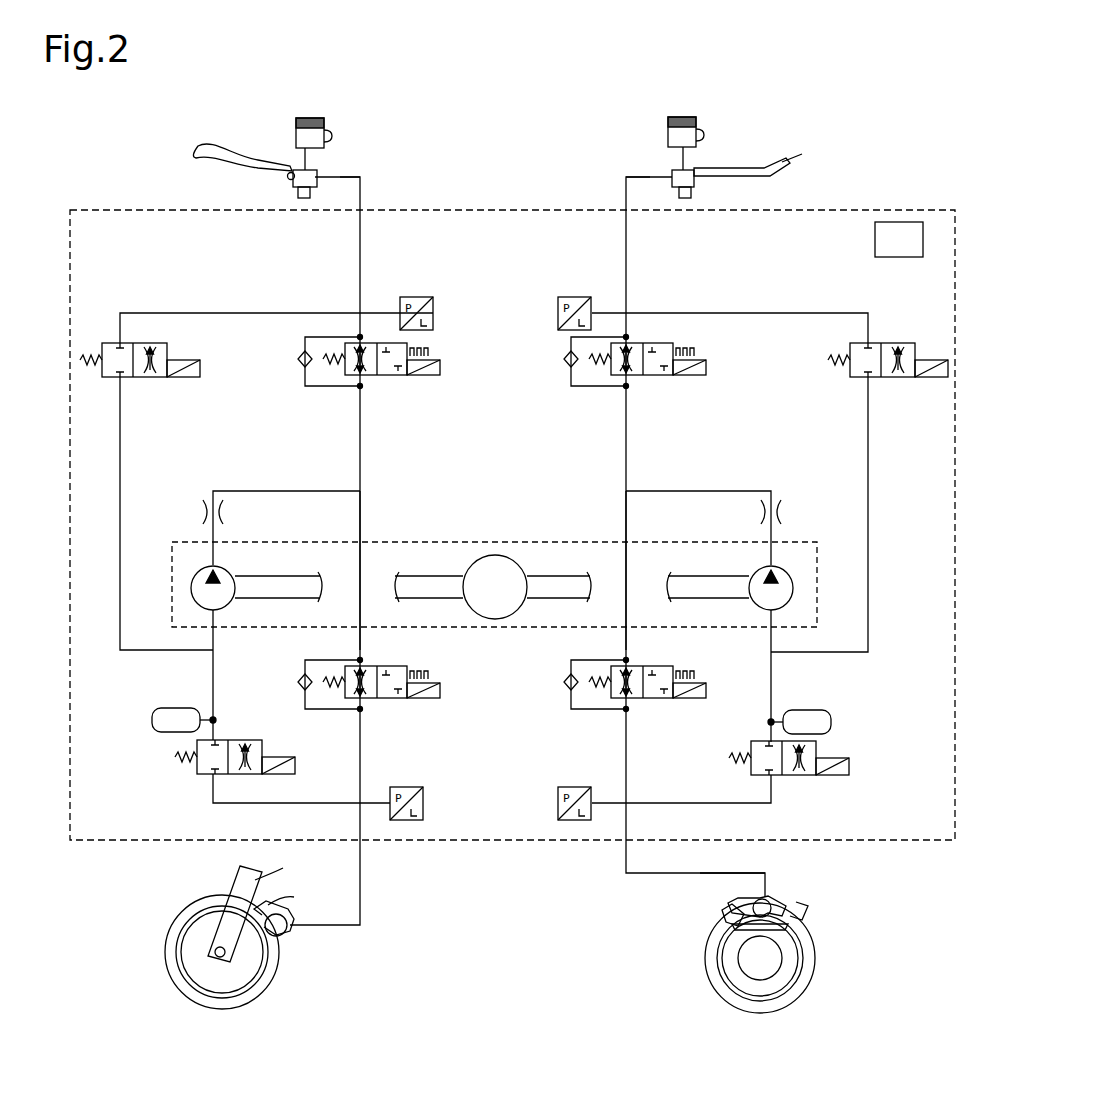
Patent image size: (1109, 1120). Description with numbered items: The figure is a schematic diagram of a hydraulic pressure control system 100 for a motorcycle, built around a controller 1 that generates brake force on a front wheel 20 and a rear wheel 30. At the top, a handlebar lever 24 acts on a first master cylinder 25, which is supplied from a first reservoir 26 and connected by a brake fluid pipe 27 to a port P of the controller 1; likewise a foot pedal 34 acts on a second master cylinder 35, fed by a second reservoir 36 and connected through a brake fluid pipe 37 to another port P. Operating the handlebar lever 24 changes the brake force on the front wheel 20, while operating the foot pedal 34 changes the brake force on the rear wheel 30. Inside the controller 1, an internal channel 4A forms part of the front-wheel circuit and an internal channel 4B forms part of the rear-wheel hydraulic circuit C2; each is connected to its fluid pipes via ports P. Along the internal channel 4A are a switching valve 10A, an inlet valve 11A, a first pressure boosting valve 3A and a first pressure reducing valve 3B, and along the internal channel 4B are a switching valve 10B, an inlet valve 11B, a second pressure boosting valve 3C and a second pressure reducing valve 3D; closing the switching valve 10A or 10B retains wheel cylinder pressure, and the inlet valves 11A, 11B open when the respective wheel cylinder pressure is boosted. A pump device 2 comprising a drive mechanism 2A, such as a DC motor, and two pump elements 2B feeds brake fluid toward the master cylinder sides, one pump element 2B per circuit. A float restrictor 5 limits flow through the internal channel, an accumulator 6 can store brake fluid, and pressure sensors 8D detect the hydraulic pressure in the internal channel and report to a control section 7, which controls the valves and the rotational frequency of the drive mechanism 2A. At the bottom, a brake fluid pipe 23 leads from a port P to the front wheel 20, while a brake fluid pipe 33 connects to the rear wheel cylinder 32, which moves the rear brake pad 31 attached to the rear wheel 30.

The hydraulic pressure control system 100 is at (903, 67).
The controller 1 is at (134, 192).
The pump device 2 is at (186, 536).
The drive mechanism 2A is at (474, 556).
The pump element 2B is at (230, 610).
The first pressure boosting valve 3A is at (395, 703).
The first pressure reducing valve 3B is at (246, 742).
The second pressure boosting valve 3C is at (668, 703).
The second pressure reducing valve 3D is at (806, 778).
The internal channel 4A is at (363, 542).
The internal channel 4B is at (622, 534).
The float restrictor 5 is at (226, 512).
The accumulator 6 is at (170, 708).
The control section 7 is at (900, 258).
The pressure sensor 8D is at (432, 305).
The switching valve 10A is at (418, 378).
The switching valve 10B is at (662, 380).
The inlet valve 11A is at (158, 382).
The inlet valve 11B is at (888, 378).
The front wheel 20 is at (176, 895).
The brake fluid pipe 23 is at (318, 928).
The handlebar lever 24 is at (233, 148).
The first master cylinder 25 is at (306, 198).
The first reservoir 26 is at (313, 115).
The brake fluid pipe 27 is at (340, 170).
The rear wheel 30 is at (824, 968).
The rear brake pad 31 is at (728, 924).
The rear wheel cylinder 32 is at (786, 900).
The brake fluid pipe 33 is at (708, 875).
The foot pedal 34 is at (775, 160).
The second master cylinder 35 is at (680, 198).
The second reservoir 36 is at (686, 115).
The brake fluid pipe 37 is at (642, 172).
The rear-wheel hydraulic circuit C2 is at (370, 492).
The port P is at (364, 186).